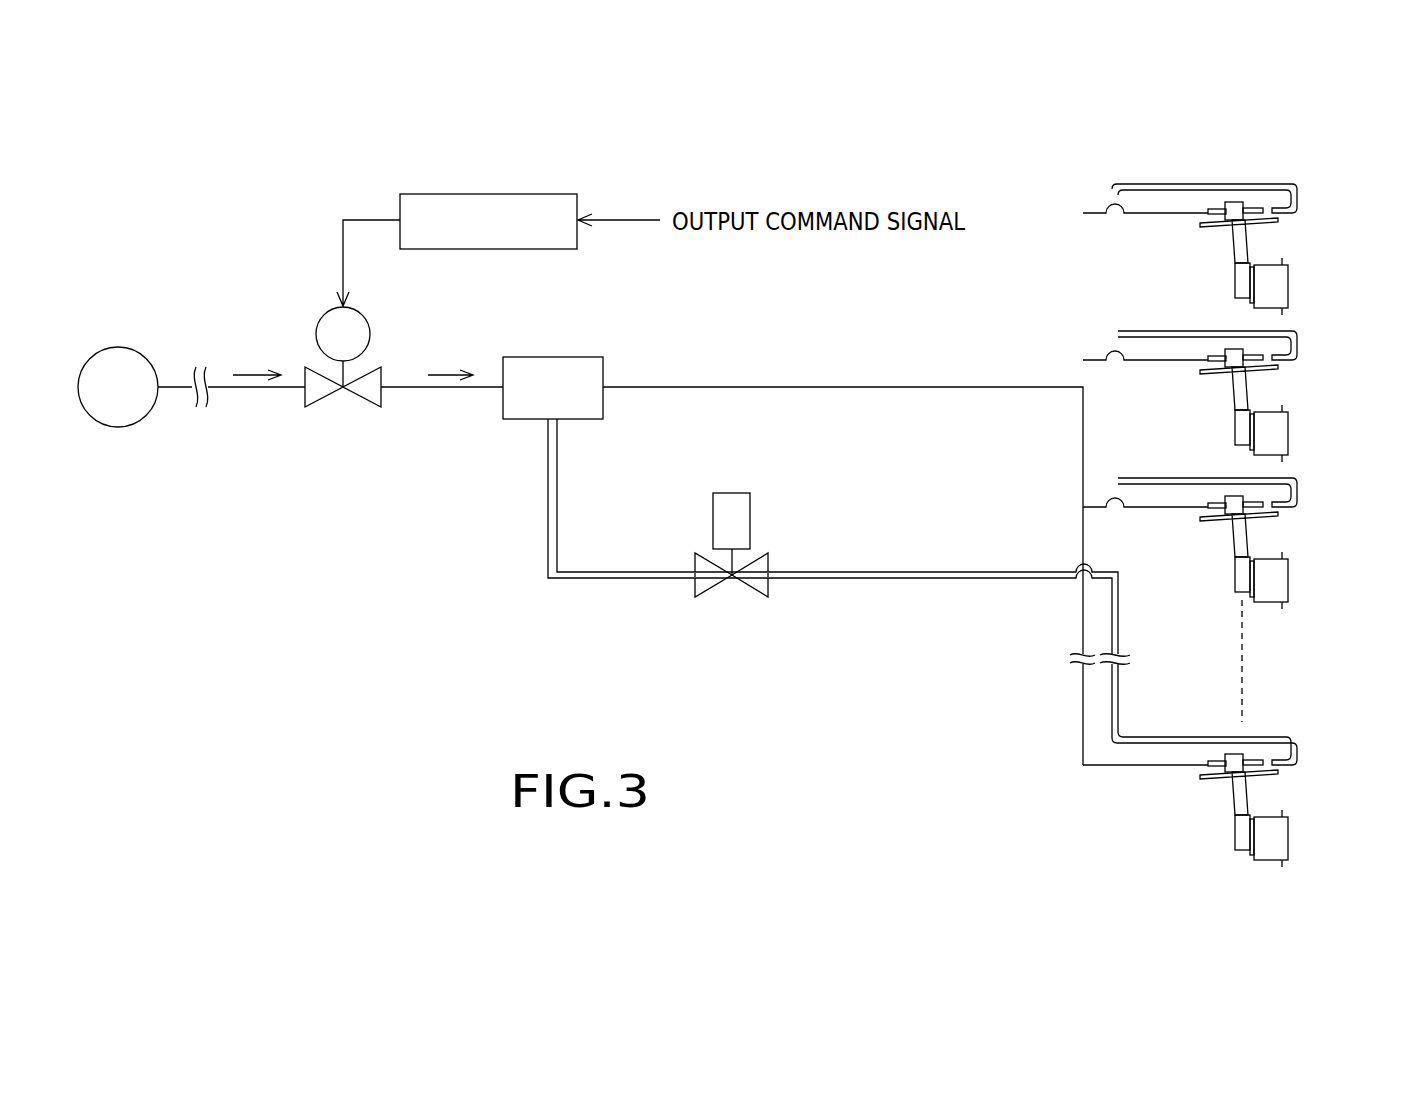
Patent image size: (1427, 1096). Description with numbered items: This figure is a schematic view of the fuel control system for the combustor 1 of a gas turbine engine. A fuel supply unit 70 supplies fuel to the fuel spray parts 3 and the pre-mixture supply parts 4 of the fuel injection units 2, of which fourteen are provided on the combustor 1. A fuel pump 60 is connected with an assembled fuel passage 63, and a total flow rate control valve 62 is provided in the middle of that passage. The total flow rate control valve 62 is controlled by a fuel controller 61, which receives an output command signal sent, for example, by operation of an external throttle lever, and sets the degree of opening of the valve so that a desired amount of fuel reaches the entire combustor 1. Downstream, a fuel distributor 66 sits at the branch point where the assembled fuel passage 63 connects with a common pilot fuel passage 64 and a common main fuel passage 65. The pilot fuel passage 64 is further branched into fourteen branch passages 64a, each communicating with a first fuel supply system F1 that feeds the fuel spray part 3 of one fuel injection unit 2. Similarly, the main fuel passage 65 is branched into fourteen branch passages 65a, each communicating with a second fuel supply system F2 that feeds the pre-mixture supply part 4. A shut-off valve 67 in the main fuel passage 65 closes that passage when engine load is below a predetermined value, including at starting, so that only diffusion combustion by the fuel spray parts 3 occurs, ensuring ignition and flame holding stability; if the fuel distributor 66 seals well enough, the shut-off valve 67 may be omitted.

The combustor 1 is at (1047, 209).
The fuel injection unit 2 is at (1293, 500).
The fuel spray part 3 is at (1293, 500).
The pre-mixture supply part 4 is at (1305, 233).
The fuel pump 60 is at (118, 347).
The fuel controller 61 is at (490, 194).
The total flow rate control valve 62 is at (318, 322).
The assembled fuel passage 63 is at (440, 389).
The pilot fuel passage 64 is at (908, 387).
The branch passage 64a is at (1156, 216).
The main fuel passage 65 is at (906, 571).
The branch passage 65a is at (1178, 184).
The fuel distributor 66 is at (556, 357).
The shut-off valve 67 is at (744, 586).
The fuel supply unit 70 is at (450, 542).
The first fuel supply system F1 is at (1218, 205).
The second fuel supply system F2 is at (1257, 201).